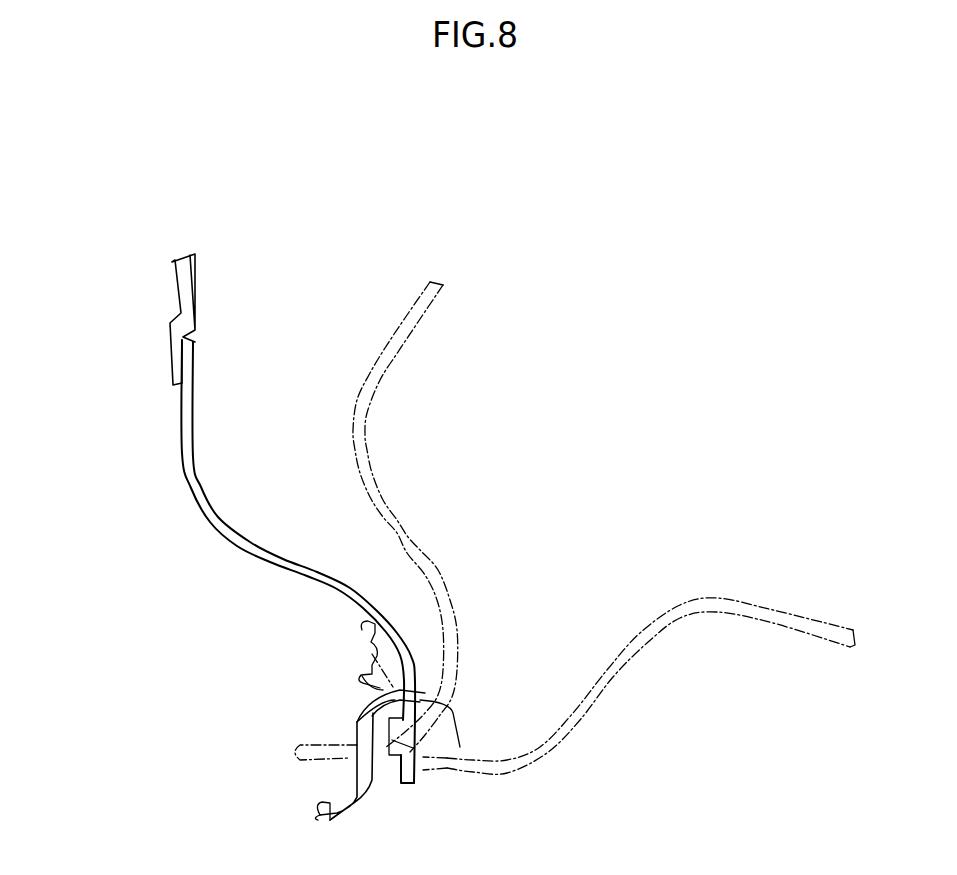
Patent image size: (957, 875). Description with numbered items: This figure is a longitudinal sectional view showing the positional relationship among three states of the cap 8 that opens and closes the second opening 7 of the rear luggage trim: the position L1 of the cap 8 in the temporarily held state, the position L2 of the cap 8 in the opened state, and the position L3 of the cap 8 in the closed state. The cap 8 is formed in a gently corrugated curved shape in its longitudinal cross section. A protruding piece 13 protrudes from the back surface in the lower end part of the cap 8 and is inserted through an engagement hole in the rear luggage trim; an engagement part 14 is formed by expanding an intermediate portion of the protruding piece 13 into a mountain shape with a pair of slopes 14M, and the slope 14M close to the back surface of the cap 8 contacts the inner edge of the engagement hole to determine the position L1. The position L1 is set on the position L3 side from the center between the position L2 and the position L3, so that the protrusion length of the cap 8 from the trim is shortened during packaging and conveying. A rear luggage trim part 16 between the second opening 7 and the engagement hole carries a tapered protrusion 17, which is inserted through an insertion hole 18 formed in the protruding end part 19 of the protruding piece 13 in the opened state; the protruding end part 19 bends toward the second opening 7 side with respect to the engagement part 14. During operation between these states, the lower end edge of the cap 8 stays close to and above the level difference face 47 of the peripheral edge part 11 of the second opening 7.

The second opening 7 is at (175, 385).
The cap 8 is at (220, 437).
The peripheral edge part 11 is at (400, 742).
The protruding piece 13 is at (375, 788).
The engagement part 14 is at (363, 728).
The slope 14M is at (365, 700).
The rear luggage trim part 16 is at (383, 643).
The protrusion 17 is at (365, 678).
The insertion hole 18 is at (338, 793).
The protruding end part 19 is at (322, 817).
The level difference face 47 is at (413, 745).
The position of the cap in the temporarily held state L1 is at (385, 303).
The position of the cap in the opened state L2 is at (775, 588).
The position of the cap in the closed state L3 is at (113, 333).